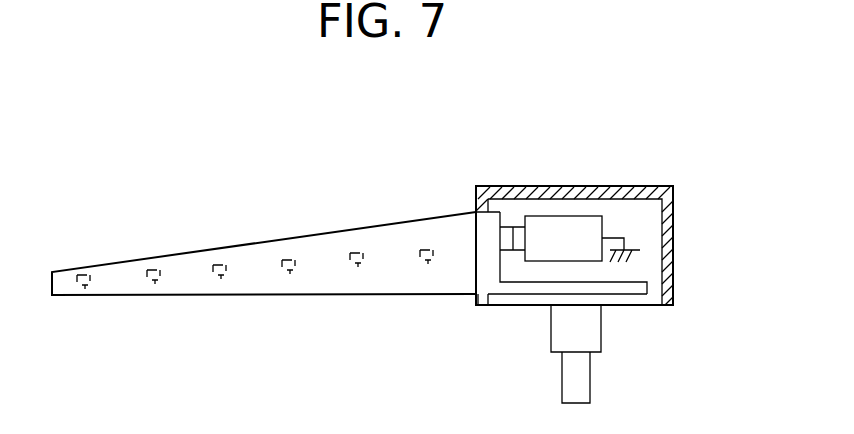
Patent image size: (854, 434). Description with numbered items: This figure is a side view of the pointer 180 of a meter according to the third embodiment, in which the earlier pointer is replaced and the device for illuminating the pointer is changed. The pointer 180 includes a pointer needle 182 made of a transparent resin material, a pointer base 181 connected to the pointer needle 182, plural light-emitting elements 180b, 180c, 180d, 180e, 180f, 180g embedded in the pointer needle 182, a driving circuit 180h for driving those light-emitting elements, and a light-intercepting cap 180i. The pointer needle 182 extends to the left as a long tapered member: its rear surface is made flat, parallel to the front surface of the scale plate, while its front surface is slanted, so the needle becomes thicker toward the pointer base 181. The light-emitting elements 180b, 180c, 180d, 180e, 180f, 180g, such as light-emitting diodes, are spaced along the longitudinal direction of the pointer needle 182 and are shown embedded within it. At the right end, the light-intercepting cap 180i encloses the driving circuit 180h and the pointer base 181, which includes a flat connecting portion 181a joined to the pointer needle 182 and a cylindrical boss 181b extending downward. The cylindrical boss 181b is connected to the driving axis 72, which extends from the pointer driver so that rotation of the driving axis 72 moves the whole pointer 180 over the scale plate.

The pointer 180 is at (508, 130).
The light-emitting element 180b is at (427, 267).
The light-emitting element 180c is at (357, 270).
The light-emitting element 180d is at (289, 277).
The light-emitting element 180e is at (220, 282).
The light-emitting element 180f is at (154, 287).
The light-emitting element 180g is at (84, 292).
The driving circuit 180h is at (583, 216).
The light-intercepting cap 180i is at (675, 218).
The pointer base 181 is at (532, 295).
The flat connecting portion 181a is at (622, 287).
The cylindrical boss 181b is at (588, 332).
The pointer needle 182 is at (213, 249).
The driving axis 72 is at (590, 373).